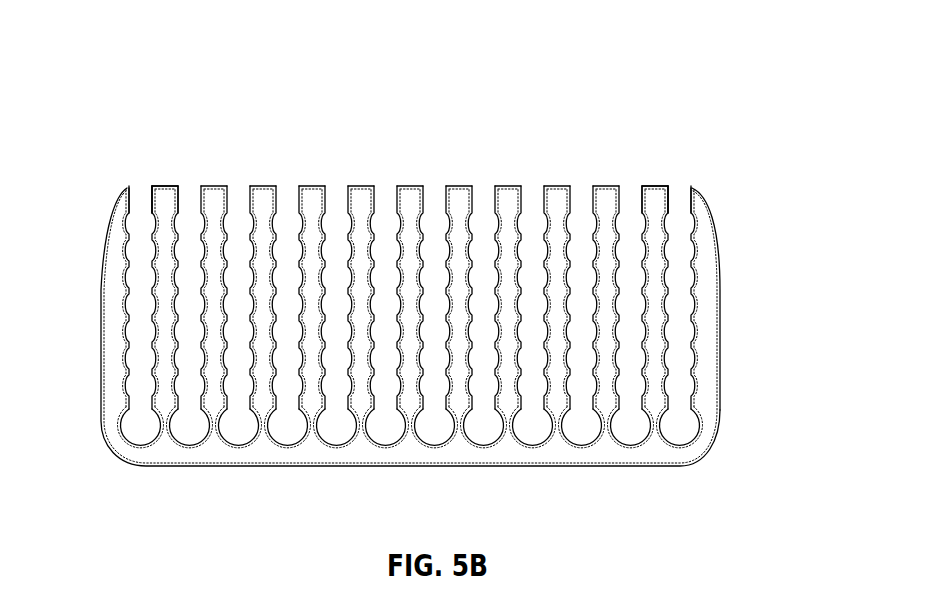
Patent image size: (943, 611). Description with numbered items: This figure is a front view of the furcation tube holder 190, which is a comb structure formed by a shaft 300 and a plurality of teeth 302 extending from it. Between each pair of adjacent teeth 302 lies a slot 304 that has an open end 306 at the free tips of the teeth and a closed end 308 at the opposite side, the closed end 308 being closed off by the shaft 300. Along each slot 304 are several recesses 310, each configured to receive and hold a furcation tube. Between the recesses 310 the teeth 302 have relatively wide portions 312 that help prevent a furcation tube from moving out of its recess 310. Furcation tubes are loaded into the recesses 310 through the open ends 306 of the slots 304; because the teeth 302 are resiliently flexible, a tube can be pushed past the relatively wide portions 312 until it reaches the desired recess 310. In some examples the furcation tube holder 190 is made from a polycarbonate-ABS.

The furcation tube holder 190 is at (748, 50).
The shaft 300 is at (593, 450).
The teeth 302 is at (460, 193).
The slot 304 is at (188, 200).
The open end 306 is at (184, 185).
The closed end 308 is at (189, 446).
The recesses 310 is at (332, 223).
The relatively wide portions 312 is at (163, 248).